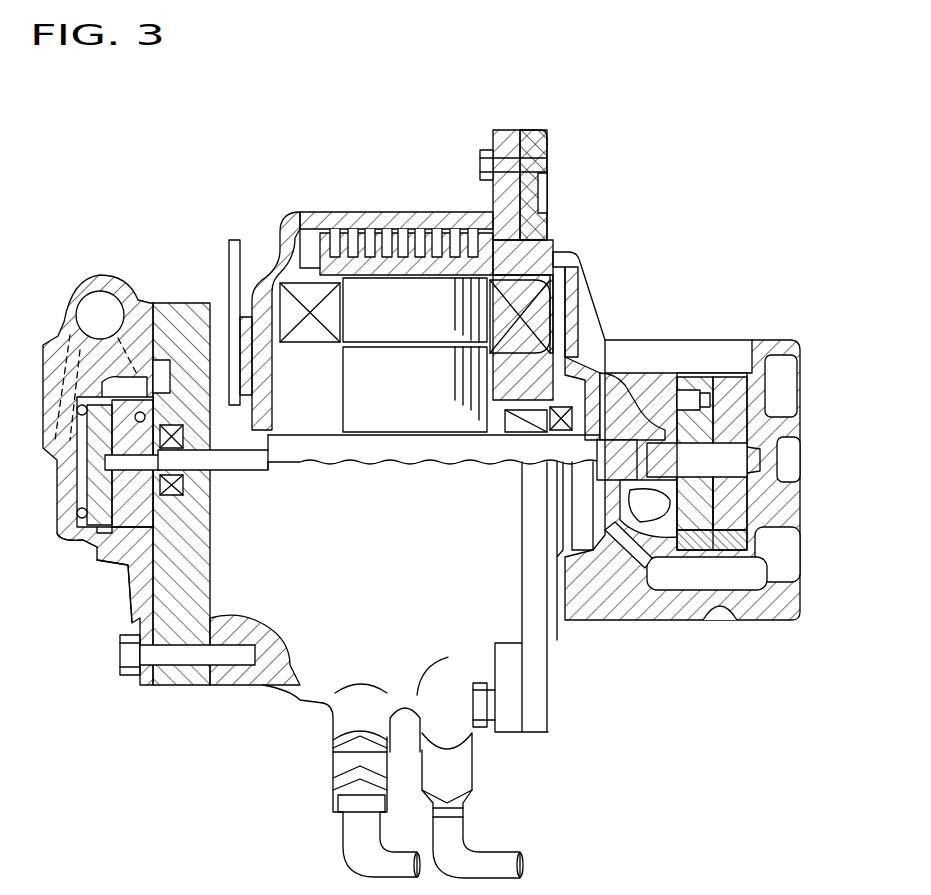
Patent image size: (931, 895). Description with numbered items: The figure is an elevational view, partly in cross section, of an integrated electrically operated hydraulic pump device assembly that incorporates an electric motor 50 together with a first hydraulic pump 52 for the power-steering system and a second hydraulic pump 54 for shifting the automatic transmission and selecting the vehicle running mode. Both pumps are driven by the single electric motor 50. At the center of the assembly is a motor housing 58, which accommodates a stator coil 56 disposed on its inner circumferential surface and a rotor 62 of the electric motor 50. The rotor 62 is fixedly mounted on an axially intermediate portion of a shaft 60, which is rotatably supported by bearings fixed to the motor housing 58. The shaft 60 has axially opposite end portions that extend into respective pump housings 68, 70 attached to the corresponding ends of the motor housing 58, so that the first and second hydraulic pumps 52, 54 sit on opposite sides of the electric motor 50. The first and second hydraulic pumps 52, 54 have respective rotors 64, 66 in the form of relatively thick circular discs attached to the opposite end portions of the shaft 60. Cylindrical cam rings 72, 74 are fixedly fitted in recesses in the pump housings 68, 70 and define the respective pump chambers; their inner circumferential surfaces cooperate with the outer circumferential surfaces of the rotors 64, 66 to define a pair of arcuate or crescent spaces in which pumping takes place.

The electric motor 50 is at (447, 296).
The first hydraulic pump 52 is at (120, 214).
The second hydraulic pump 54 is at (716, 439).
The stator coil 56 is at (412, 293).
The motor housing 58 is at (298, 222).
The shaft 60 is at (455, 450).
The rotor 62 is at (382, 418).
The rotor 64 is at (118, 485).
The rotor 66 is at (735, 508).
The pump housing 68 is at (77, 533).
The pump housing 70 is at (782, 427).
The cylindrical cam ring 72 is at (128, 565).
The cylindrical cam ring 74 is at (737, 382).